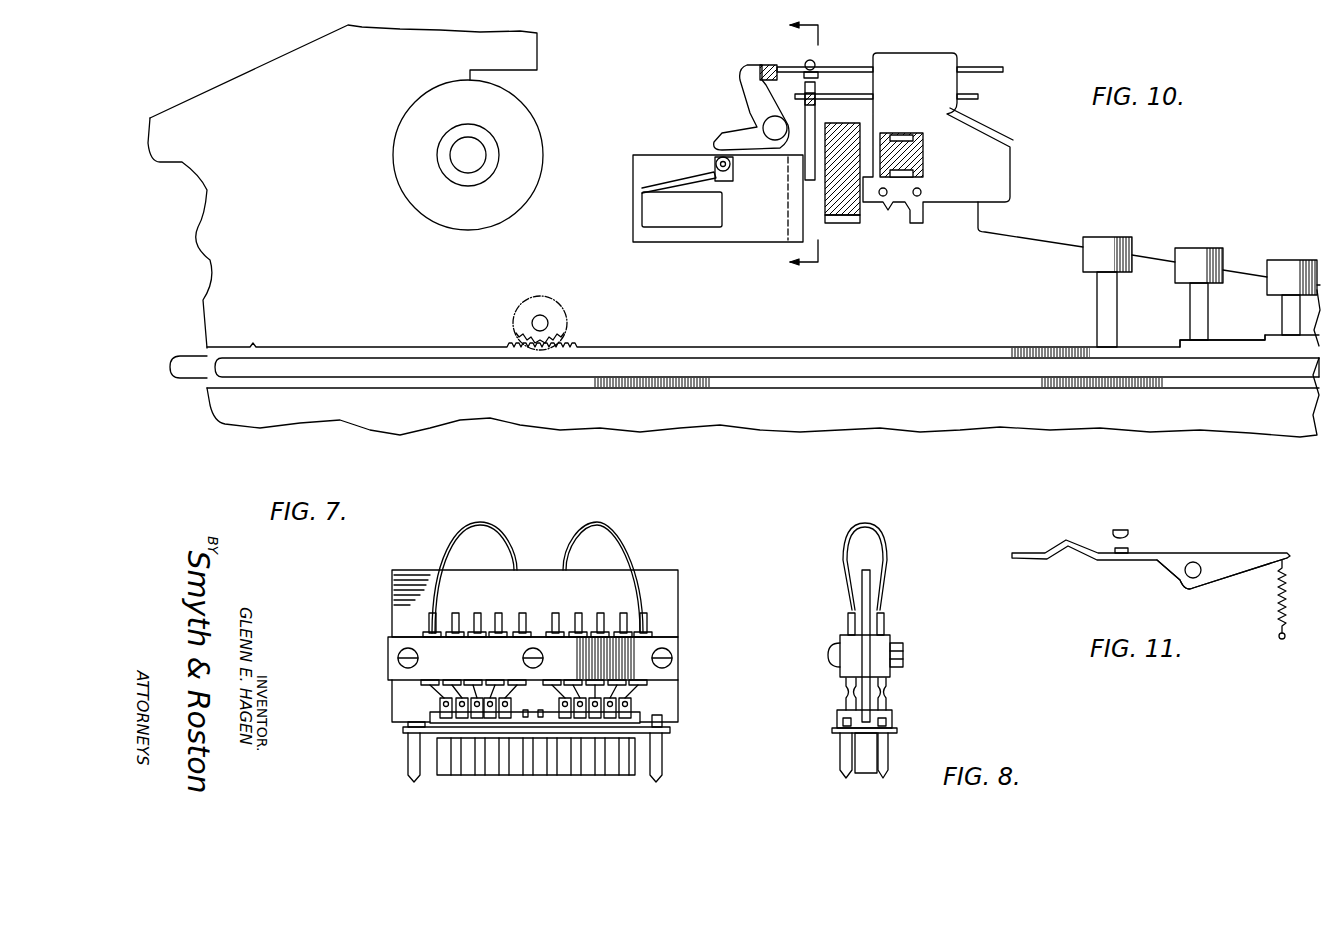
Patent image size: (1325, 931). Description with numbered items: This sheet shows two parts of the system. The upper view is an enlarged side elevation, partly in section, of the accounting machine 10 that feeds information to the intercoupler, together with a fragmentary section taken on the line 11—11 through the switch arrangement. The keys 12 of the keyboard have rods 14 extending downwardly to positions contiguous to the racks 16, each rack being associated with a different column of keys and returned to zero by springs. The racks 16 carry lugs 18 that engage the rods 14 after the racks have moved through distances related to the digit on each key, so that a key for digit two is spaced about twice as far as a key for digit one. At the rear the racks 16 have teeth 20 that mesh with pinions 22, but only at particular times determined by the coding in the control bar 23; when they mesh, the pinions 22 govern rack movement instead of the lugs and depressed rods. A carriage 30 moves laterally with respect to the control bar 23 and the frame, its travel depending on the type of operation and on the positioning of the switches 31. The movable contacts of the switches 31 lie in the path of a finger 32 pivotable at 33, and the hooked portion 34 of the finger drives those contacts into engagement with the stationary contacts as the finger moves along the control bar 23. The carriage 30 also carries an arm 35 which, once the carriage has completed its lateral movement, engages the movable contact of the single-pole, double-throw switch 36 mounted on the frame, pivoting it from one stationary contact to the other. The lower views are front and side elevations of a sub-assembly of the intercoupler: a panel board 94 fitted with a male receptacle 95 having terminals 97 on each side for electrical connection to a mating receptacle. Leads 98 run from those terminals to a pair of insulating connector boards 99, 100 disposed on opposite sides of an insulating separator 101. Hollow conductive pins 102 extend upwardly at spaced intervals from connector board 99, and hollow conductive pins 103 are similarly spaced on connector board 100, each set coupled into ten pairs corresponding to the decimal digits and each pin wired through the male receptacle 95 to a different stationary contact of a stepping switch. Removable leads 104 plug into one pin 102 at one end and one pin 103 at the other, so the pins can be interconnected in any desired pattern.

In FIG. 10, the accounting machine 10 is at (1021, 244).
In FIG. 10, the section line 11 is at (786, 144).
In FIG. 10, the keys 12 is at (1120, 240).
In FIG. 10, the rods 14 is at (1097, 304).
In FIG. 10, the racks 16 is at (1160, 390).
In FIG. 10, the lugs 18 is at (1180, 340).
In FIG. 10, the teeth 20 is at (783, 346).
In FIG. 10, the pinions 22 is at (552, 314).
In FIG. 10, the control bar 23 is at (946, 54).
In FIG. 10, the carriage 30 is at (537, 52).
In FIG. 10, the switches 31 is at (864, 98).
In FIG. 11, the switches 31 is at (1127, 546).
In FIG. 10, the finger 32 is at (814, 116).
In FIG. 11, the finger 32 is at (1245, 566).
In FIG. 11, the pivot 33 is at (1190, 576).
In FIG. 10, the hooked portion 34 is at (814, 85).
In FIG. 11, the hooked portion 34 is at (1077, 548).
In FIG. 10, the arm 35 is at (750, 103).
In FIG. 10, the single-pole, double-throw switch 36 is at (713, 206).
In FIG. 7, the panel board 94 is at (680, 689).
In FIG. 8, the panel board 94 is at (898, 707).
In FIG. 7, the male receptacle 95 is at (645, 713).
In FIG. 8, the male receptacle 95 is at (837, 717).
In FIG. 7, the terminals 97 is at (616, 772).
In FIG. 8, the terminals 97 is at (843, 757).
In FIG. 7, the leads 98 is at (440, 694).
In FIG. 8, the leads 98 is at (845, 693).
In FIG. 7, the connector board 99 is at (672, 643).
In FIG. 8, the connector board 99 is at (848, 643).
In FIG. 8, the connector board 100 is at (885, 647).
In FIG. 8, the separator 101 is at (890, 588).
In FIG. 7, the hollow conductive pins 102 is at (645, 626).
In FIG. 8, the hollow conductive pins 102 is at (848, 620).
In FIG. 8, the hollow conductive pins 103 is at (884, 620).
In FIG. 7, the leads 104 is at (481, 522).
In FIG. 8, the leads 104 is at (887, 540).